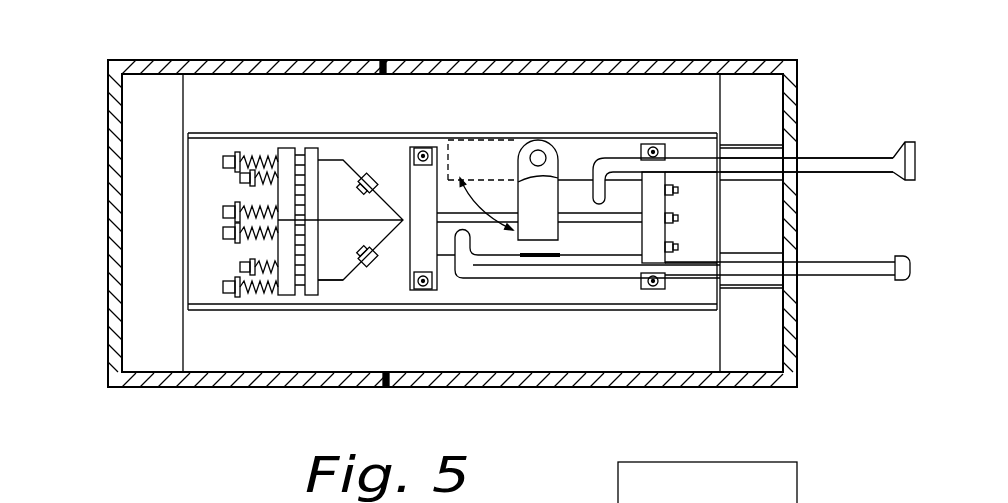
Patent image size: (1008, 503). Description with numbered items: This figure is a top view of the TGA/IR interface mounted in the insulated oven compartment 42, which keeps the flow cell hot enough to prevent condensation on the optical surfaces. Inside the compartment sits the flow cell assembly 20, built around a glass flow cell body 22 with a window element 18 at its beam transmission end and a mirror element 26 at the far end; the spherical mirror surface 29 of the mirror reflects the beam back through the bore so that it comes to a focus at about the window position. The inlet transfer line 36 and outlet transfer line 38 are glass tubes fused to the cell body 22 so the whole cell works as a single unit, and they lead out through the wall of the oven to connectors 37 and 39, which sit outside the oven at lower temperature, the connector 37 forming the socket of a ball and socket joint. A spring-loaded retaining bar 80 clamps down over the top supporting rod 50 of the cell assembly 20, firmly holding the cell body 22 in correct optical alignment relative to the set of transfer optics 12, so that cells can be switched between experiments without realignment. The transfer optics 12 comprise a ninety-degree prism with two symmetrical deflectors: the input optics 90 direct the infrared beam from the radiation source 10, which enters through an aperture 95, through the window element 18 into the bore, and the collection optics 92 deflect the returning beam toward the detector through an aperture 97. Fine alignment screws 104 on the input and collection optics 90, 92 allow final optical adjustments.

The radiation source 10 is at (707, 482).
The transfer optics 12 is at (332, 156).
The window element 18 is at (438, 268).
The flow cell assembly 20 is at (520, 256).
The flow cell body 22 is at (585, 240).
The mirror element 26 is at (650, 252).
The spherical mirror surface 29 is at (632, 197).
The inlet transfer line 36 is at (836, 163).
The connector 37 is at (908, 140).
The outlet transfer line 38 is at (842, 272).
The connector 39 is at (905, 281).
The oven compartment 42 is at (255, 385).
The top supporting rod 50 is at (450, 212).
The spring-loaded retaining bar 80 is at (538, 197).
The input optics 90 is at (343, 190).
The collection optics 92 is at (340, 268).
The aperture 95 is at (392, 62).
The aperture 97 is at (392, 387).
The fine alignment screws 104 is at (222, 265).